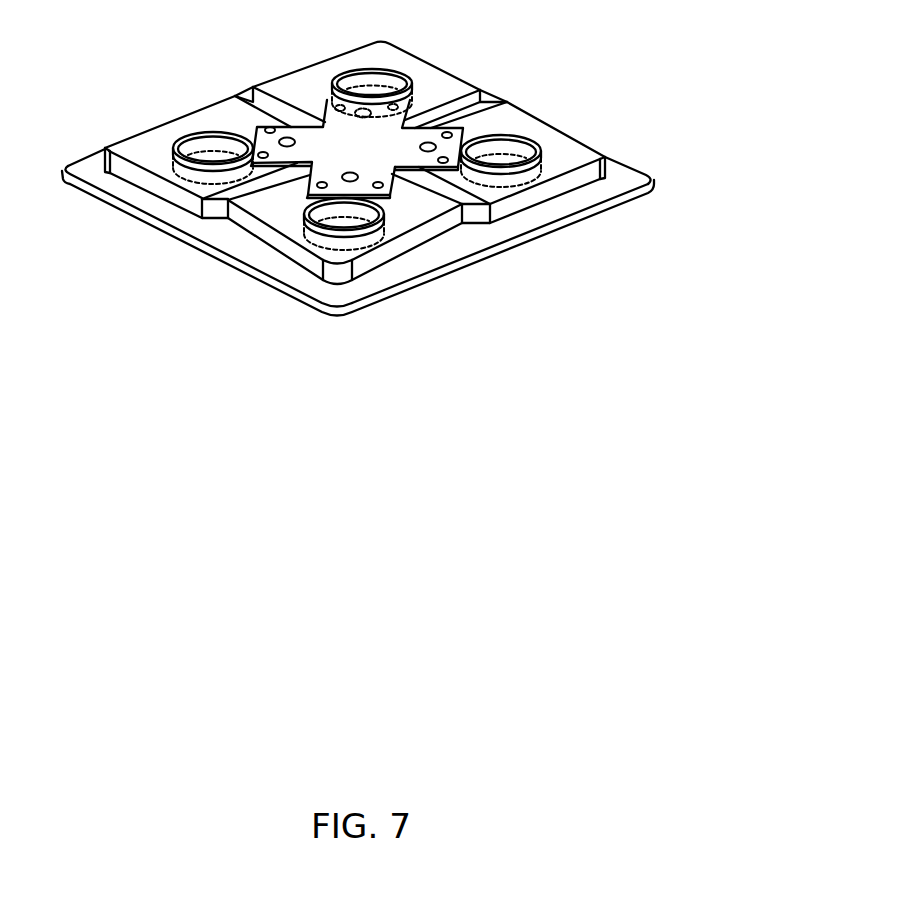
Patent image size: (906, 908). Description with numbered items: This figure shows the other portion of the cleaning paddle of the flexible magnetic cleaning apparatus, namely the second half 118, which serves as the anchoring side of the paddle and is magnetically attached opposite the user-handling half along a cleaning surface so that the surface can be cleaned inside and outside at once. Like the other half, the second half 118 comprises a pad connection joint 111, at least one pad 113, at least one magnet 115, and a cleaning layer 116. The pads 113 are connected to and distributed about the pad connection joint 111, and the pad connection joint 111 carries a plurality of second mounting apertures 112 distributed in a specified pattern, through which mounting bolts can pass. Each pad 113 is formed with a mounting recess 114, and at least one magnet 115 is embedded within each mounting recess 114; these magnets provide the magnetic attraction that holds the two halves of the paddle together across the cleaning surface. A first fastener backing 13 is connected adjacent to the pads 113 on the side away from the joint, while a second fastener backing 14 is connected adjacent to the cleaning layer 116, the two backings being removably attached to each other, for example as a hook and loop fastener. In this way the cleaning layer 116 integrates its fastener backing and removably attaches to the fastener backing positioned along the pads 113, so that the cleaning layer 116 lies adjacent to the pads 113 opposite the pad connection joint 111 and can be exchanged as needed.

The pad connection joint 111 is at (389, 159).
The second mounting apertures 112 is at (287, 137).
The pad 113 is at (178, 110).
The mounting recess 114 is at (541, 144).
The magnet 115 is at (509, 145).
The cleaning layer 116 is at (634, 161).
The first fastener backing 13 is at (563, 203).
The second fastener backing 14 is at (621, 178).
The second half 118 is at (409, 224).